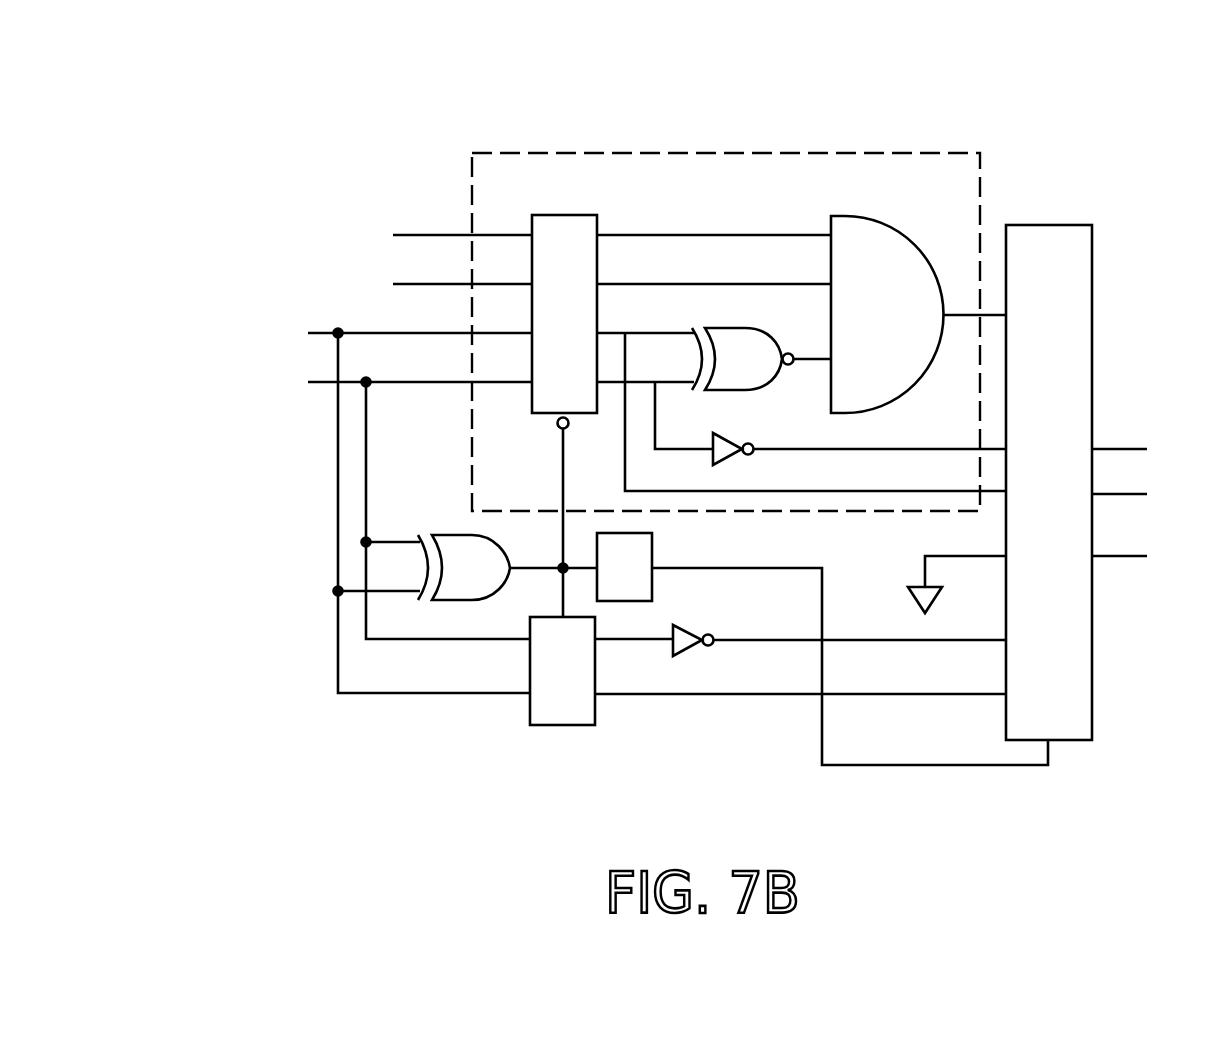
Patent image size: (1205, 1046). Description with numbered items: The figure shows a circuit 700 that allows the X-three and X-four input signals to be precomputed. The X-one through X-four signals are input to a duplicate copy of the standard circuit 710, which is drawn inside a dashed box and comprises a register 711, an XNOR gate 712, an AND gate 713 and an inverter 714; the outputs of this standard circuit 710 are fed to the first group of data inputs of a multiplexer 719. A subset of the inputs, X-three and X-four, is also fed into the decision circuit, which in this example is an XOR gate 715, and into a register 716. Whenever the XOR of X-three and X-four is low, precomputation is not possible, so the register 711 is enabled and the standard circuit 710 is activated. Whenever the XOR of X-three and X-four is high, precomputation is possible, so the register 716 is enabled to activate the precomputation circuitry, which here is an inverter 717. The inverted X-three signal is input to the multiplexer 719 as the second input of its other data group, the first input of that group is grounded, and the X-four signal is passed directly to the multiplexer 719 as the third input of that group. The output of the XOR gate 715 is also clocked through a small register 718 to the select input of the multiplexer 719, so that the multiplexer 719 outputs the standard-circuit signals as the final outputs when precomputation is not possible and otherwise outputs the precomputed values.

The logic circuit 700 is at (163, 106).
The standard circuit 710 is at (980, 165).
The register 711 is at (565, 215).
The XNOR gate 712 is at (757, 328).
The AND gate 713 is at (893, 221).
The inverter 714 is at (727, 434).
The XOR gate 715 is at (485, 537).
The register 716 is at (596, 717).
The inverter 717 is at (690, 627).
The register 718 is at (652, 556).
The multiplexer 719 is at (1092, 680).